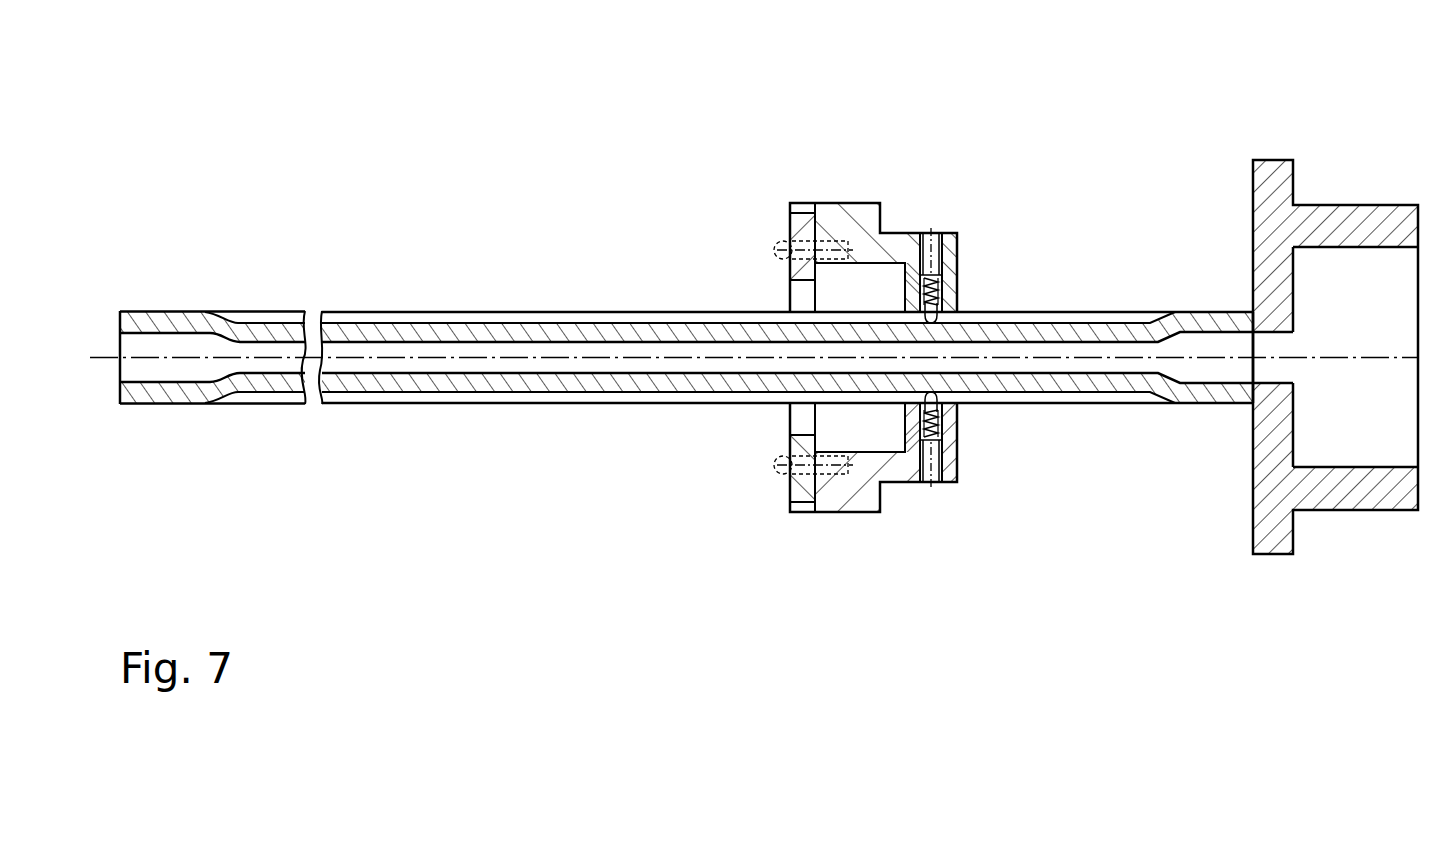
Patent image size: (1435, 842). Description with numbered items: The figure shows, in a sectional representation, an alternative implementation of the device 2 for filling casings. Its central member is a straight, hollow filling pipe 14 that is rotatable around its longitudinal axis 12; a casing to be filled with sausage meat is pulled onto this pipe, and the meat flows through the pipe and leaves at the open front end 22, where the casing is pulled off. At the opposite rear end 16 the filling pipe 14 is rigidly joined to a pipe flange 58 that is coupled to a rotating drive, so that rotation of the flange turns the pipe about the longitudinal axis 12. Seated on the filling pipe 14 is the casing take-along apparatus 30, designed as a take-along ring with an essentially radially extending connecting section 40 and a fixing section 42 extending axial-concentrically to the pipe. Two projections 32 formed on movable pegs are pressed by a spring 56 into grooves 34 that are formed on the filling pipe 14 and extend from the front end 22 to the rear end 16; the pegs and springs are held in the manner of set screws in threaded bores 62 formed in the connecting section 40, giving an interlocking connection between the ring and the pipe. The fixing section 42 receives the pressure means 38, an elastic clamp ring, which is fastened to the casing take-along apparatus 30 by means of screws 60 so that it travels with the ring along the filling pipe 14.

The device for filling casings 2 is at (660, 427).
The longitudinal axis 12 is at (250, 358).
The filling pipe 14 is at (387, 378).
The rear end 16 is at (1195, 320).
The front end 22 is at (163, 405).
The casing take-along apparatus 30 is at (861, 148).
The projection 32 is at (940, 318).
The groove 34 is at (458, 315).
The pressure means 38 is at (795, 268).
The connecting section 40 is at (950, 242).
The fixing section 42 is at (890, 242).
The spring 56 is at (957, 447).
The pipe flange 58 is at (1280, 175).
The screw 60 is at (780, 242).
The threaded bore 62 is at (928, 483).